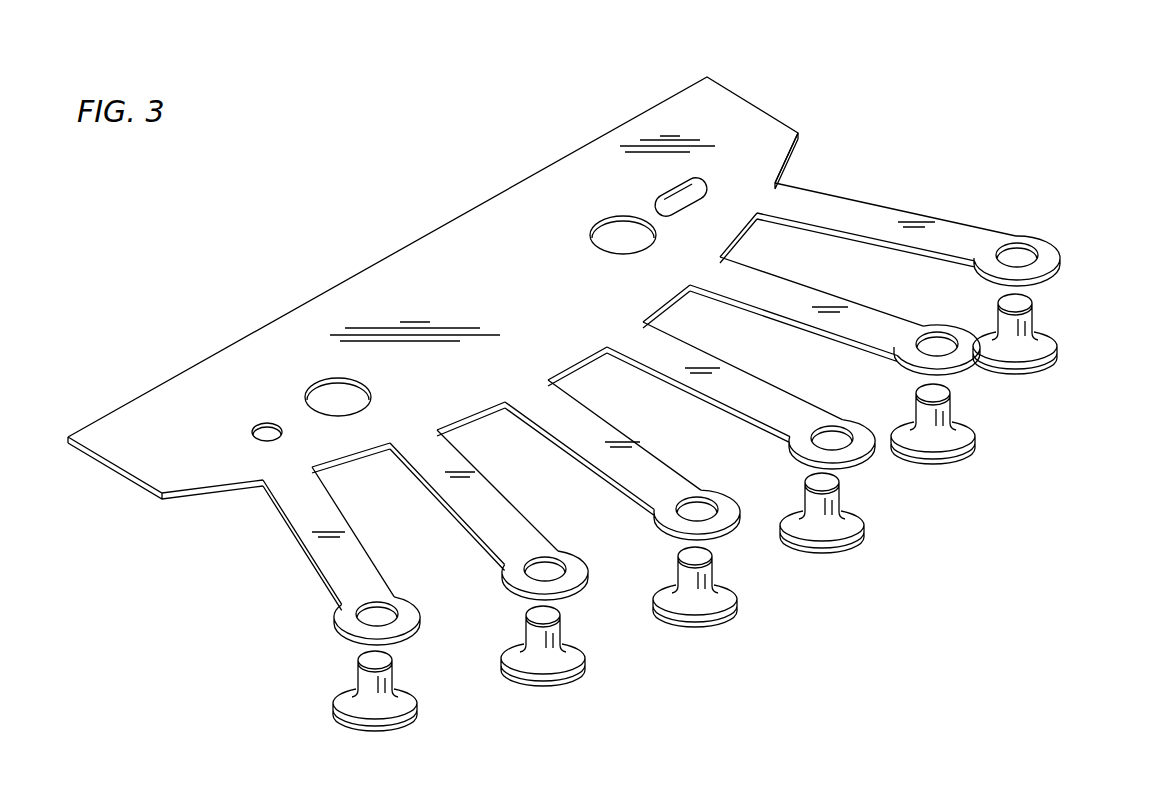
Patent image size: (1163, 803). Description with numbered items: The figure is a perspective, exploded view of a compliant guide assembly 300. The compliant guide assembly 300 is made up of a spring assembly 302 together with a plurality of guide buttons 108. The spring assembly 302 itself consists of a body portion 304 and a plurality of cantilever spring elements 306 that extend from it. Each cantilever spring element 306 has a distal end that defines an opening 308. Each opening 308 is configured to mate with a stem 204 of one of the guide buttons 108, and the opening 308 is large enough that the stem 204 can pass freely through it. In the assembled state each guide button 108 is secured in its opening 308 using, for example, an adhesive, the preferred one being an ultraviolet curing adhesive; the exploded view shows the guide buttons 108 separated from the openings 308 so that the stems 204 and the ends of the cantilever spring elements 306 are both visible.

The compliant guide assembly 300 is at (460, 100).
The spring assembly 302 is at (741, 99).
The body portion 304 is at (494, 308).
The cantilever spring element 306 is at (893, 227).
The opening 308 is at (1025, 257).
The stem 204 is at (1027, 316).
The guide button 108 is at (1045, 362).